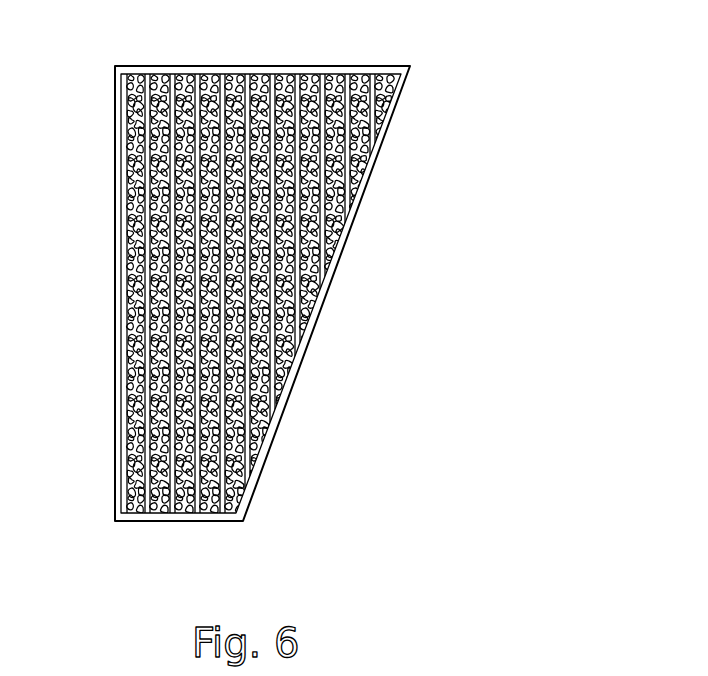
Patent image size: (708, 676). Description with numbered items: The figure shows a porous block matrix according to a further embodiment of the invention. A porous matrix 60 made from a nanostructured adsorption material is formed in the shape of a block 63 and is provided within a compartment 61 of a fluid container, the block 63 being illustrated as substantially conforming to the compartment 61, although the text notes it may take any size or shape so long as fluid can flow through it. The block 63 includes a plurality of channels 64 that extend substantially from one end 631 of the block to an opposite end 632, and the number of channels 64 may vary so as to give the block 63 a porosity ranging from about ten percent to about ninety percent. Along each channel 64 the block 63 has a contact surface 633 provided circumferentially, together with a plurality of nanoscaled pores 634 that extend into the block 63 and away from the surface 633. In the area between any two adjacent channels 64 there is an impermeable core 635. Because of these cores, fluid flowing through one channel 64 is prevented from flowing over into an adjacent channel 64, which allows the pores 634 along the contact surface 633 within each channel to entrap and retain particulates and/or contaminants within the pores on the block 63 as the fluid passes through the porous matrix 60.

The porous matrix 60 is at (334, 292).
The compartment 61 is at (348, 236).
The block 63 is at (206, 292).
The end 631 is at (252, 75).
The opposite end 632 is at (215, 510).
The contact surface 633 is at (147, 291).
The nanoscaled pores 634 is at (127, 105).
The impermeable core 635 is at (128, 208).
The channels 64 is at (197, 316).